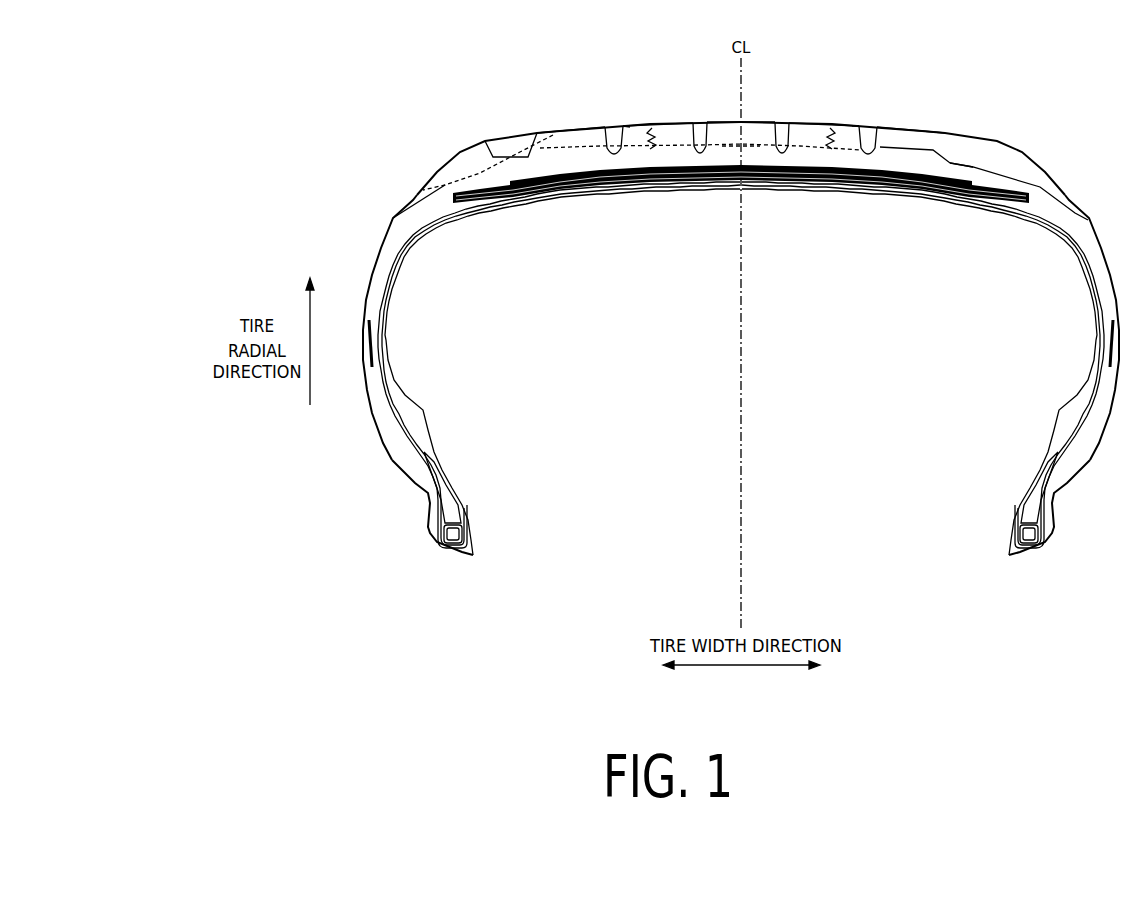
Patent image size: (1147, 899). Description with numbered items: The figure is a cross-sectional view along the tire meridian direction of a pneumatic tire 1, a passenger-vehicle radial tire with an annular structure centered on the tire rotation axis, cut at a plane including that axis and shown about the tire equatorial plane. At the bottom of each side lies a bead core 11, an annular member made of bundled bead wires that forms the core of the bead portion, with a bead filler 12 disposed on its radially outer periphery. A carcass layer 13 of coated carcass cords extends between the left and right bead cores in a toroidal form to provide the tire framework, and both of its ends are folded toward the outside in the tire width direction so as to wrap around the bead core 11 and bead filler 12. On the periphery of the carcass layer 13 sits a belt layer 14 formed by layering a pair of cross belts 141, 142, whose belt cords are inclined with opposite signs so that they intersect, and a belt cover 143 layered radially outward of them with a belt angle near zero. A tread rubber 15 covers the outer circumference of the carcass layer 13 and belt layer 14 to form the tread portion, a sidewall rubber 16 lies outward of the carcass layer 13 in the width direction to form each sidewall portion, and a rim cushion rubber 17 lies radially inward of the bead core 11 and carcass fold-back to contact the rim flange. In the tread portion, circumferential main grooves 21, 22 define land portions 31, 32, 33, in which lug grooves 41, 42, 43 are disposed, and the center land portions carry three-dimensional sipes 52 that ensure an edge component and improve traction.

The pneumatic tire 1 is at (723, 305).
The bead core 11 is at (452, 534).
The bead filler 12 is at (438, 487).
The carcass layer 13 is at (1038, 220).
The belt layer 14 is at (741, 225).
The cross belt 141 is at (887, 247).
The cross belt 142 is at (950, 197).
The belt cover 143 is at (908, 183).
The tread rubber 15 is at (1030, 167).
The sidewall rubber 16 is at (375, 280).
The rim cushion rubber 17 is at (415, 483).
The circumferential main groove 21 is at (697, 125).
The circumferential main groove 22 is at (610, 130).
The land portion 31 is at (750, 122).
The land portion 32 is at (624, 127).
The land portion 33 is at (577, 130).
The lug groove 41 is at (728, 142).
The lug groove 42 is at (680, 145).
The lug groove 43 is at (553, 138).
The three-dimensional sipe 52 is at (630, 127).